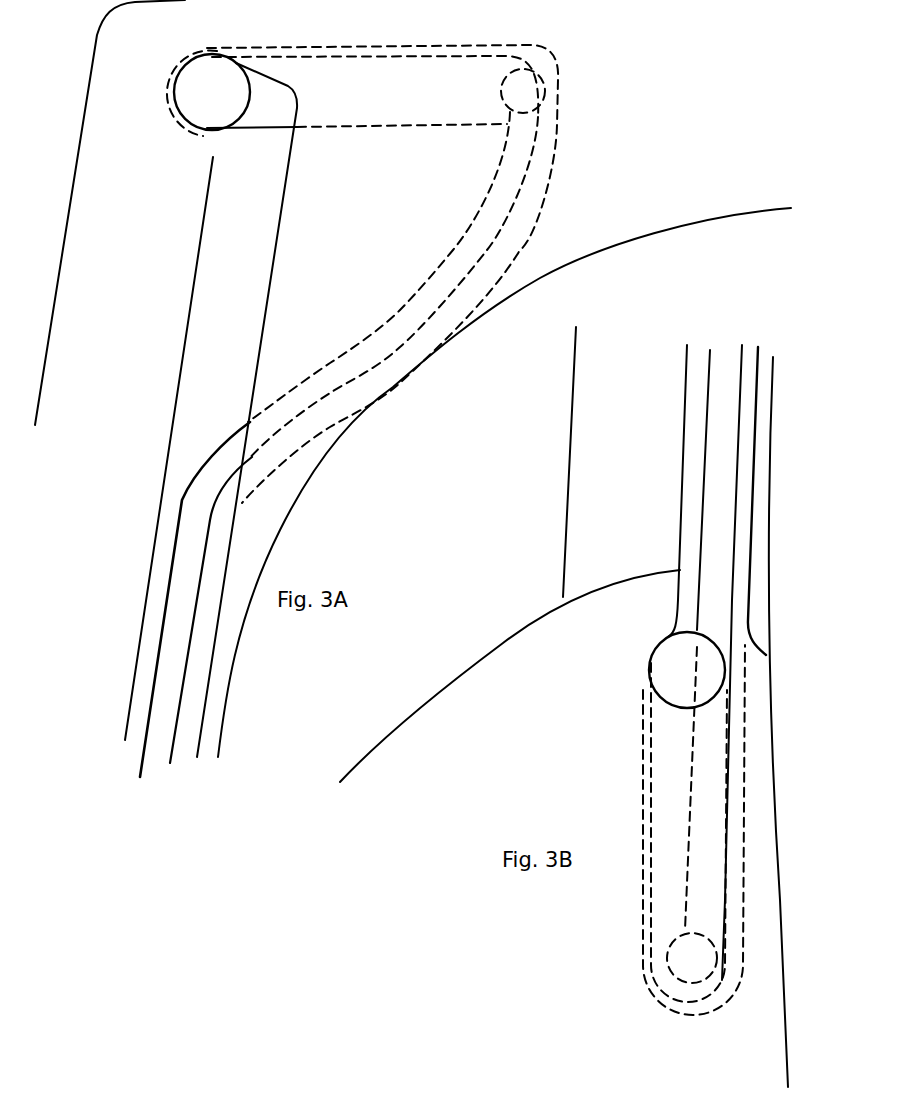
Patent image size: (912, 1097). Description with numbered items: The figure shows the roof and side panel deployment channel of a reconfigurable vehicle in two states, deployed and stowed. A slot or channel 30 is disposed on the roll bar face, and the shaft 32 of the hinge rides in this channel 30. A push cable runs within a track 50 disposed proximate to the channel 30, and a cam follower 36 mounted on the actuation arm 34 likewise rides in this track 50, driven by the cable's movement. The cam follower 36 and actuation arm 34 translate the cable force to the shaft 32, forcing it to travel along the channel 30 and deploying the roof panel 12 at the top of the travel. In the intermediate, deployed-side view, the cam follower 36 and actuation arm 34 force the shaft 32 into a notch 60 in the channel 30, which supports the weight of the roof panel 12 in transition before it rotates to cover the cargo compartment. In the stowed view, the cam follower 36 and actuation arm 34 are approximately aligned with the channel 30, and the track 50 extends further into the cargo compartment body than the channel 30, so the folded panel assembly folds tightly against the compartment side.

In FIG. 3A, the roof panel 12 is at (705, 150).
In FIG. 3B, the roof panel 12 is at (510, 554).
In FIG. 3A, the channel 30 is at (215, 387).
In FIG. 3B, the channel 30 is at (740, 524).
In FIG. 3A, the shaft 32 is at (220, 107).
In FIG. 3B, the shaft 32 is at (677, 675).
In FIG. 3A, the actuation arm 34 is at (387, 108).
In FIG. 3B, the actuation arm 34 is at (702, 882).
In FIG. 3A, the cam follower 36 is at (557, 70).
In FIG. 3B, the cam follower 36 is at (705, 990).
In FIG. 3A, the track 50 is at (380, 381).
In FIG. 3B, the track 50 is at (672, 843).
In FIG. 3A, the notch 60 is at (182, 125).